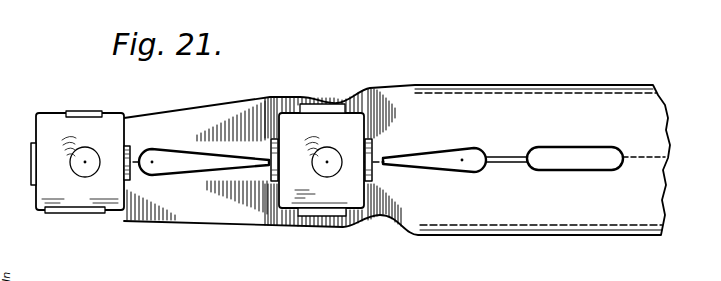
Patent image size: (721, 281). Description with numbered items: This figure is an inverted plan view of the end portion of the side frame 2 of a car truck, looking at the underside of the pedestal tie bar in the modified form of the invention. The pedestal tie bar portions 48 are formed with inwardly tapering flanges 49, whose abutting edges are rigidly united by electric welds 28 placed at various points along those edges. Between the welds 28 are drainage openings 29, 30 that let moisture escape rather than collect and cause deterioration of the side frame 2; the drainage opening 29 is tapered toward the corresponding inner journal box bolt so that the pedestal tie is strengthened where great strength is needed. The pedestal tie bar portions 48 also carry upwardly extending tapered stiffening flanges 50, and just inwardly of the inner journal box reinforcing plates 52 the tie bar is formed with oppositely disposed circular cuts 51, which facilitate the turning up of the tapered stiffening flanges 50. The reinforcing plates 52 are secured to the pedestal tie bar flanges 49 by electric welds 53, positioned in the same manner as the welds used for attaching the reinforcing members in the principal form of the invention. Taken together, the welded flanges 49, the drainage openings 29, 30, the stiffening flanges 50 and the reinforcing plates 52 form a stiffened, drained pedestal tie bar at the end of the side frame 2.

The side frame 2 is at (666, 119).
The welds 28 is at (661, 156).
The drainage opening 29 is at (455, 150).
The drainage opening 30 is at (606, 147).
The pedestal tie bar portion 48 is at (580, 96).
The inwardly tapering flanges 49 is at (190, 112).
The tapered stiffening flanges 50 is at (446, 92).
The circular cuts 51 is at (384, 100).
The reinforcing plates 52 is at (286, 124).
The electric welds 53 is at (130, 146).